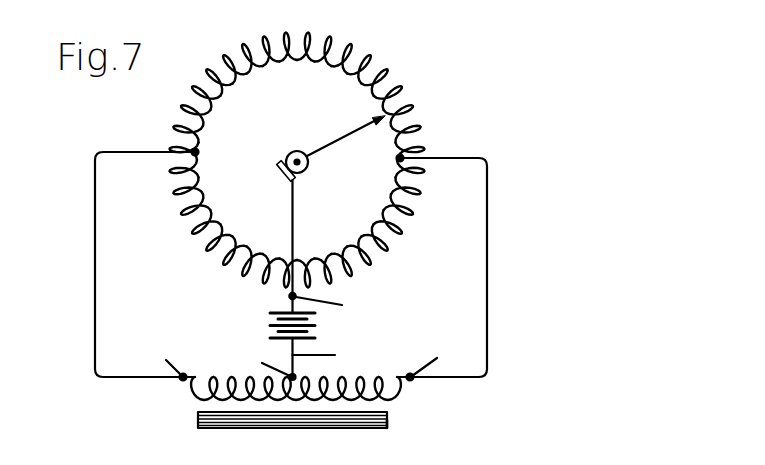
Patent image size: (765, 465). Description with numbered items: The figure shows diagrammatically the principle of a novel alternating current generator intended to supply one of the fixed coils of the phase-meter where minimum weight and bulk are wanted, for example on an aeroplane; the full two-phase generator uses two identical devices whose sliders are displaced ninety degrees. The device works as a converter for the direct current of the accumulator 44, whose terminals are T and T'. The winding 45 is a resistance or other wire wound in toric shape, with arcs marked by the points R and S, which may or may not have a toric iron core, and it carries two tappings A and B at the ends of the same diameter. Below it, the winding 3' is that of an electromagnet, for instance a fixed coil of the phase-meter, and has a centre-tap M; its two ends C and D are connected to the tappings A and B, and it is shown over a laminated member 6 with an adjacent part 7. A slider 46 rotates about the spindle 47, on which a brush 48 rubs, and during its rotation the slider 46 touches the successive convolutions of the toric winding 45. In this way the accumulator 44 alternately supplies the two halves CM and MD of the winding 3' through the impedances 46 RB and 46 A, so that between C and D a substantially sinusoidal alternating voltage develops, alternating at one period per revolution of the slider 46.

The winding of resistance wire wound in toric shape 45 is at (314, 159).
The slider 46 is at (380, 113).
The spindle 47 is at (308, 165).
The brush 48 is at (274, 228).
The accumulator 44 is at (280, 328).
The winding of an electromagnet 3' is at (296, 370).
The laminated core 6 is at (198, 422).
The core member 7 is at (387, 422).
The point of toric winding R is at (292, 75).
The point of toric winding S is at (281, 171).
The terminal of accumulator T is at (324, 305).
The terminal of accumulator T' is at (324, 353).
The centre-tap M is at (270, 365).
The tapping A is at (392, 158).
The tapping B is at (204, 151).
The end of winding C is at (170, 362).
The end of winding D is at (432, 362).